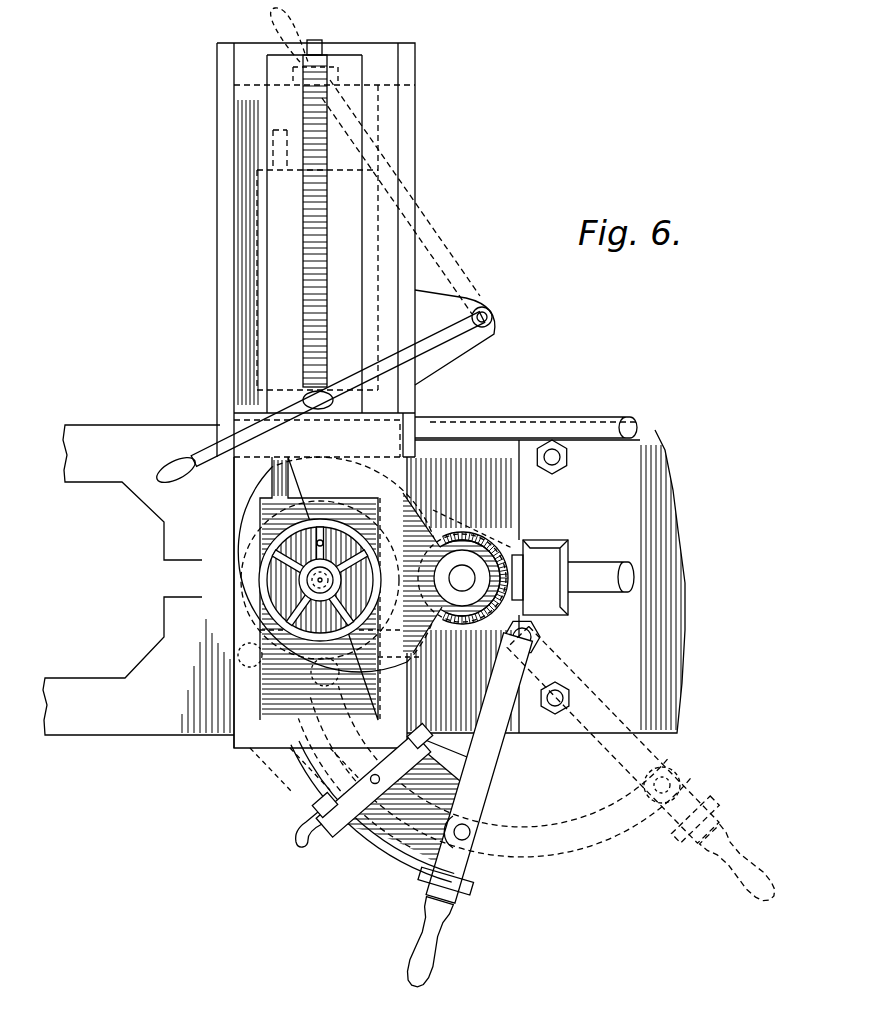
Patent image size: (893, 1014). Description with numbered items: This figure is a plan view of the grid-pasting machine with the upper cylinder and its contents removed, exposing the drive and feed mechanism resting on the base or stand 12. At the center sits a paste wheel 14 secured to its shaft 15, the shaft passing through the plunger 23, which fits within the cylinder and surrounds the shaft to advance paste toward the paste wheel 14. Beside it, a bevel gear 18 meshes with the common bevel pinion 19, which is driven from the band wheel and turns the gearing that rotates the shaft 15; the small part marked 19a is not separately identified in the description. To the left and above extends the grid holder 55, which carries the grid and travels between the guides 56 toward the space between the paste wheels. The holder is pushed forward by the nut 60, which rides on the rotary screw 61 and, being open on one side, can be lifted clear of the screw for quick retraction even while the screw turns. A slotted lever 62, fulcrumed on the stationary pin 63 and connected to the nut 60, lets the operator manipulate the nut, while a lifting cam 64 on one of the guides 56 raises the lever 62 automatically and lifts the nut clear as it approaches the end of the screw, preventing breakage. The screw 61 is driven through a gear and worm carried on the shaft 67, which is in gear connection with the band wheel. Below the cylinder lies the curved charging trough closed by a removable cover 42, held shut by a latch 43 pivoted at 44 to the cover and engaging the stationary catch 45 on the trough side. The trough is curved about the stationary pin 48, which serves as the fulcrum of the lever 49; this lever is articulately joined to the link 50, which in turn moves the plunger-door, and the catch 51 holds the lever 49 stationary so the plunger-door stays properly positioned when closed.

The base or stand 12 is at (140, 735).
The paste wheel 14 is at (265, 540).
The shaft 15 is at (318, 582).
The bevel gear 18 is at (470, 534).
The bevel pinion 19 is at (518, 548).
The worm 19a is at (322, 541).
The plunger 23 is at (280, 590).
The removable cover 42 is at (378, 835).
The latch 43 is at (308, 848).
The pivot 44 is at (373, 785).
The stationary catch 45 is at (430, 746).
The stationary pin 48 is at (542, 638).
The lever 49 is at (445, 800).
The link 50 is at (478, 822).
The catch 51 is at (460, 898).
The grid holder 55 is at (287, 130).
The guide 56 is at (415, 178).
The nut 60 is at (330, 74).
The rotary screw 61 is at (327, 300).
The slotted lever 62 is at (447, 262).
The stationary pin 63 is at (488, 327).
The lifting cam 64 is at (216, 432).
The shaft 67 is at (518, 418).